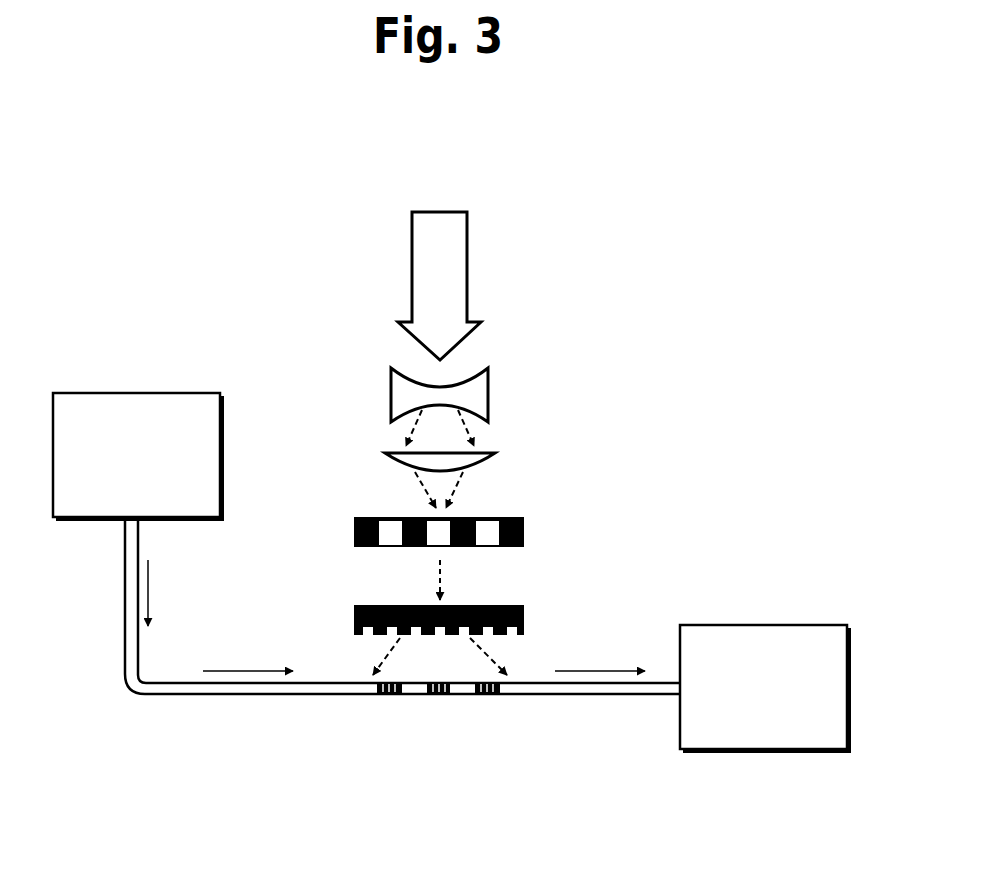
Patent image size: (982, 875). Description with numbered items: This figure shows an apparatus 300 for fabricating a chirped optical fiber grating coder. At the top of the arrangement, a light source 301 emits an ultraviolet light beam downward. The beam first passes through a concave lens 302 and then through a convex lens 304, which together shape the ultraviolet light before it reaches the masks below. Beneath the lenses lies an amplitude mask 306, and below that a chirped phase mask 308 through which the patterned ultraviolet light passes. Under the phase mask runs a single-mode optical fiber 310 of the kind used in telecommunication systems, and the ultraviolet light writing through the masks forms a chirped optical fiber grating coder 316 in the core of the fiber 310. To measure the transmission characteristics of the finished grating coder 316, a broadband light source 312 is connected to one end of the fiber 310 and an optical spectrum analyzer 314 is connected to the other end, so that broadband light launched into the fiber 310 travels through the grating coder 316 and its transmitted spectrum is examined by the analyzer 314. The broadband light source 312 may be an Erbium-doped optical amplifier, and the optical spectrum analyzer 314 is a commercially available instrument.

The apparatus 300 is at (144, 254).
The light source 301 is at (468, 265).
The concave lens 302 is at (488, 393).
The convex lens 304 is at (495, 452).
The amplitude mask 306 is at (524, 528).
The chirped phase mask 308 is at (524, 604).
The single-mode optical fiber 310 is at (278, 696).
The broadband light source 312 is at (223, 447).
The optical spectrum analyzer 314 is at (755, 752).
The chirped optical fiber grating coder 316 is at (510, 699).